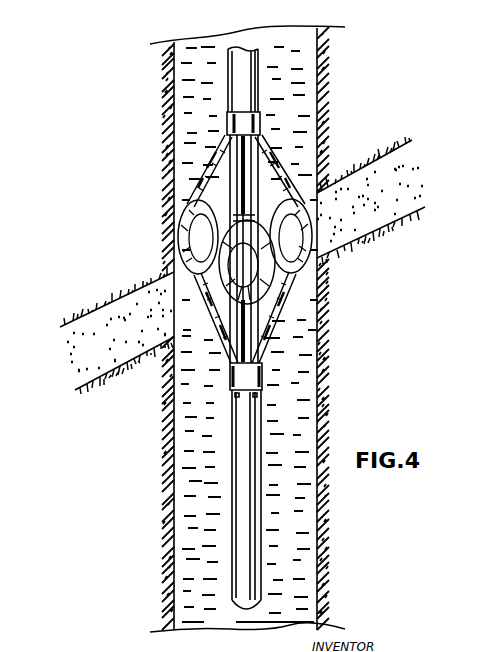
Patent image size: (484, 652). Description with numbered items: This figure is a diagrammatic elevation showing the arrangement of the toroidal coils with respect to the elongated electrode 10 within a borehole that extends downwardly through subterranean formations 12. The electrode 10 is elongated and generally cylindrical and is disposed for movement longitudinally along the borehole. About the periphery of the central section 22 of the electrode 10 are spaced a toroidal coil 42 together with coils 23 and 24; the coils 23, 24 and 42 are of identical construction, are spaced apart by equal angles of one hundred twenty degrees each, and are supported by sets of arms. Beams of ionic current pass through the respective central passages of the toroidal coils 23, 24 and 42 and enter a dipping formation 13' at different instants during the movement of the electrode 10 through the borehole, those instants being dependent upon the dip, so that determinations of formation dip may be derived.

The electrode 10 is at (257, 82).
The subterranean formations 12 is at (349, 65).
The dipping formation 13' is at (242, 259).
The central section 22 is at (237, 177).
The toroidal coil 23 is at (192, 204).
The toroidal coil 24 is at (228, 294).
The toroidal coil 42 is at (307, 278).